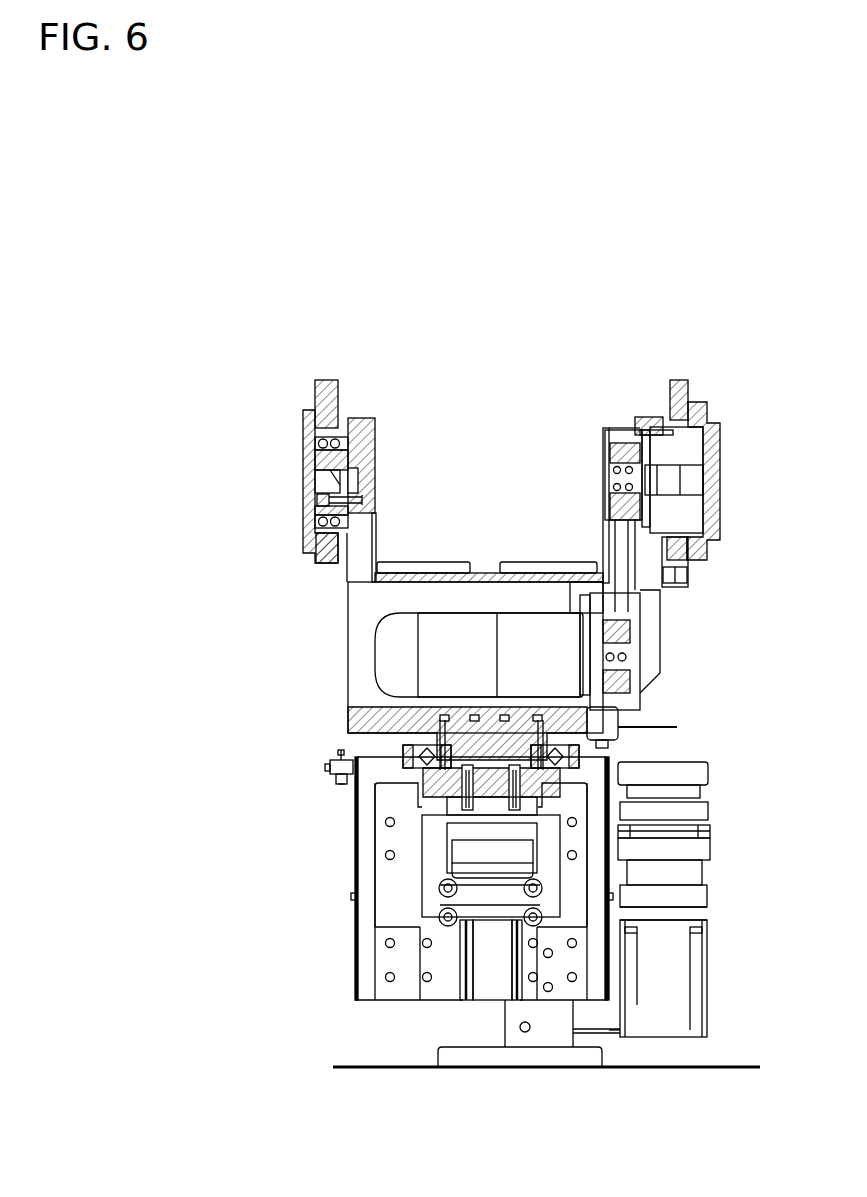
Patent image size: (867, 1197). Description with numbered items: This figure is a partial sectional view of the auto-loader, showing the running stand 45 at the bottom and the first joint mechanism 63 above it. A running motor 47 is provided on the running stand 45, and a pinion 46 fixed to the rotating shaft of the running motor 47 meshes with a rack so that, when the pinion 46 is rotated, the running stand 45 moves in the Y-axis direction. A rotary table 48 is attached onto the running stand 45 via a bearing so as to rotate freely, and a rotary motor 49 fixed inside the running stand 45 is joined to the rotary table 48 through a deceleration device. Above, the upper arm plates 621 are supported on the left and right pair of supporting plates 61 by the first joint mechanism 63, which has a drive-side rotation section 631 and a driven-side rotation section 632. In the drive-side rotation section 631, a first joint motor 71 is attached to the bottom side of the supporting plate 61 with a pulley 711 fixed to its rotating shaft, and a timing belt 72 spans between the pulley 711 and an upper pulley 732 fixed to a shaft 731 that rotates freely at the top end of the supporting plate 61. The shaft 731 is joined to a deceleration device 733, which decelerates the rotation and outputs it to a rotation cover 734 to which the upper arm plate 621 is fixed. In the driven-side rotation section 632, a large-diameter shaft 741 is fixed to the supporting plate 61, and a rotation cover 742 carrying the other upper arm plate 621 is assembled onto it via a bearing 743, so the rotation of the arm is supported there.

The first joint mechanism 63 is at (531, 331).
The drive-side rotation section 631 is at (528, 413).
The driven-side rotation section 632 is at (420, 407).
The upper arm plate 621 is at (323, 379).
The supporting plate 61 is at (360, 418).
The shaft 741 is at (303, 463).
The rotation cover 742 is at (308, 497).
The bearing 743 is at (308, 538).
The rotation cover 734 is at (720, 450).
The deceleration device 733 is at (712, 505).
The pulley 732 is at (603, 457).
The shaft 731 is at (603, 490).
The first joint motor 71 is at (487, 638).
The timing belt 72 is at (635, 600).
The pulley 711 is at (640, 680).
The running stand 45 is at (378, 793).
The pinion 46 is at (693, 776).
The running motor 47 is at (672, 971).
The rotary table 48 is at (453, 772).
The rotary motor 49 is at (492, 947).